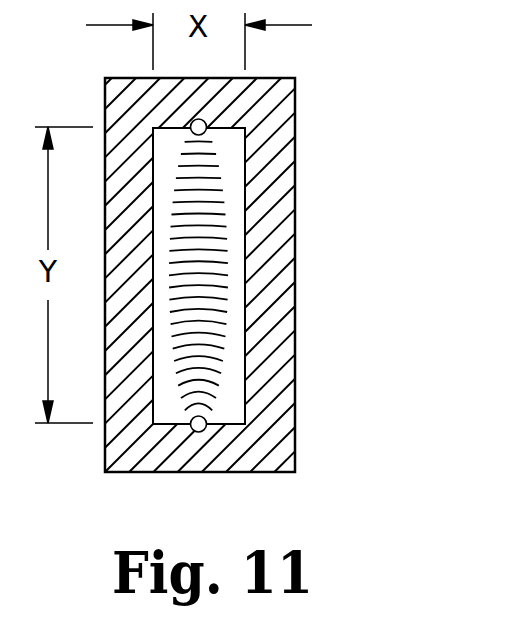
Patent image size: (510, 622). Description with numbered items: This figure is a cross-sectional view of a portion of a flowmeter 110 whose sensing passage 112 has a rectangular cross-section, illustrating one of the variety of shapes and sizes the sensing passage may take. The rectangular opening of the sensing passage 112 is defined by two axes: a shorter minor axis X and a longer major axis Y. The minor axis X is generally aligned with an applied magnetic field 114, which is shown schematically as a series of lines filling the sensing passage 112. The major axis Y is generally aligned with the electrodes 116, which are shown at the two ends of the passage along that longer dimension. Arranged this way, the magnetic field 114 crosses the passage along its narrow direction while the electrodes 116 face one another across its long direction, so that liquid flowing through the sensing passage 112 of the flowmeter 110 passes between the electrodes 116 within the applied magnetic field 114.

The flowmeter 110 is at (283, 298).
The sensing passage 112 is at (297, 168).
The applied magnetic field 114 is at (170, 310).
The electrodes 116 is at (203, 120).